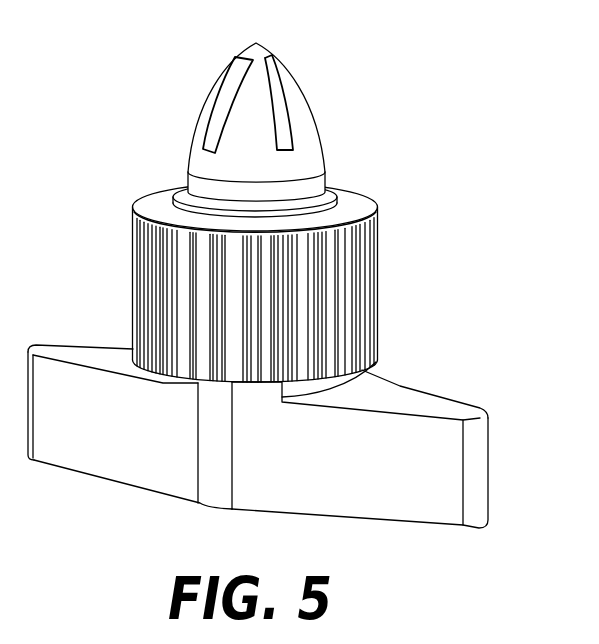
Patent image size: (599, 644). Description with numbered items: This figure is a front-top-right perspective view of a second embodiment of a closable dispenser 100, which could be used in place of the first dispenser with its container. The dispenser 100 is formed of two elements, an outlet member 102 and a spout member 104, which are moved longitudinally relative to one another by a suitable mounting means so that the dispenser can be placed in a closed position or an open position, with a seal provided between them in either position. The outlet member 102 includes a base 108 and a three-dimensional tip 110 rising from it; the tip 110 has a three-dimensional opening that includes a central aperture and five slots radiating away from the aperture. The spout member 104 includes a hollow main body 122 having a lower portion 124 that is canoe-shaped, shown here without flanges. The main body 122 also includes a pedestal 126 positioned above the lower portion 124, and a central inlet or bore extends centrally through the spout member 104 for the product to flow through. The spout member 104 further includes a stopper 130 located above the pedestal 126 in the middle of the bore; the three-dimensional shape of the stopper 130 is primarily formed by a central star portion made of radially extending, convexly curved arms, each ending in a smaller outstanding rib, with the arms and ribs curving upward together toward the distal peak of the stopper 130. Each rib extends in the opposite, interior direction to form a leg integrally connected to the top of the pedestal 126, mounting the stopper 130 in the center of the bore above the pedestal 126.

The closable dispenser 100 is at (268, 292).
The outlet member 102 is at (305, 282).
The spout member 104 is at (267, 451).
The base 108 is at (383, 231).
The 3-D tip 110 is at (290, 105).
The hollow main body 122 is at (137, 452).
The lower portion 124 is at (360, 468).
The pedestal 126 is at (307, 392).
The stopper 130 is at (259, 53).